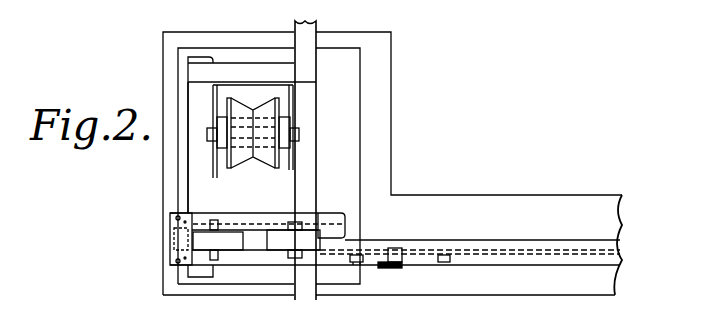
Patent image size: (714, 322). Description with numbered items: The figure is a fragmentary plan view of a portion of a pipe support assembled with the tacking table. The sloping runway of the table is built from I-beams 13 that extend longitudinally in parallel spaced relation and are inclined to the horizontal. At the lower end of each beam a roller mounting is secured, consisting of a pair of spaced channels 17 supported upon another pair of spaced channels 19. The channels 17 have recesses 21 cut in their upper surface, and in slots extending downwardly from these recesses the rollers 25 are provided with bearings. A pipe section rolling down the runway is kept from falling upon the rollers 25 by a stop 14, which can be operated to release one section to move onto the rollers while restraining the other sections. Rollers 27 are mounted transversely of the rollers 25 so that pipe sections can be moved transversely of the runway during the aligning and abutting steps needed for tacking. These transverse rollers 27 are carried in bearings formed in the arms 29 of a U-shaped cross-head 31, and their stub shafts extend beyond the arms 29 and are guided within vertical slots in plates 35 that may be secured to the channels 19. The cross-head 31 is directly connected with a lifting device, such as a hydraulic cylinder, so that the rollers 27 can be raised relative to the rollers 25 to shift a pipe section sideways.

The I-beams 13 is at (508, 241).
The stop 14 is at (358, 262).
The channels 17 is at (270, 234).
The channels 19 is at (188, 187).
The recesses 21 is at (213, 264).
The rollers 25 is at (238, 240).
The rollers 27 is at (254, 110).
The arms 29 is at (285, 118).
The U-shaped cross-head 31 is at (242, 120).
The plates 35 is at (292, 170).